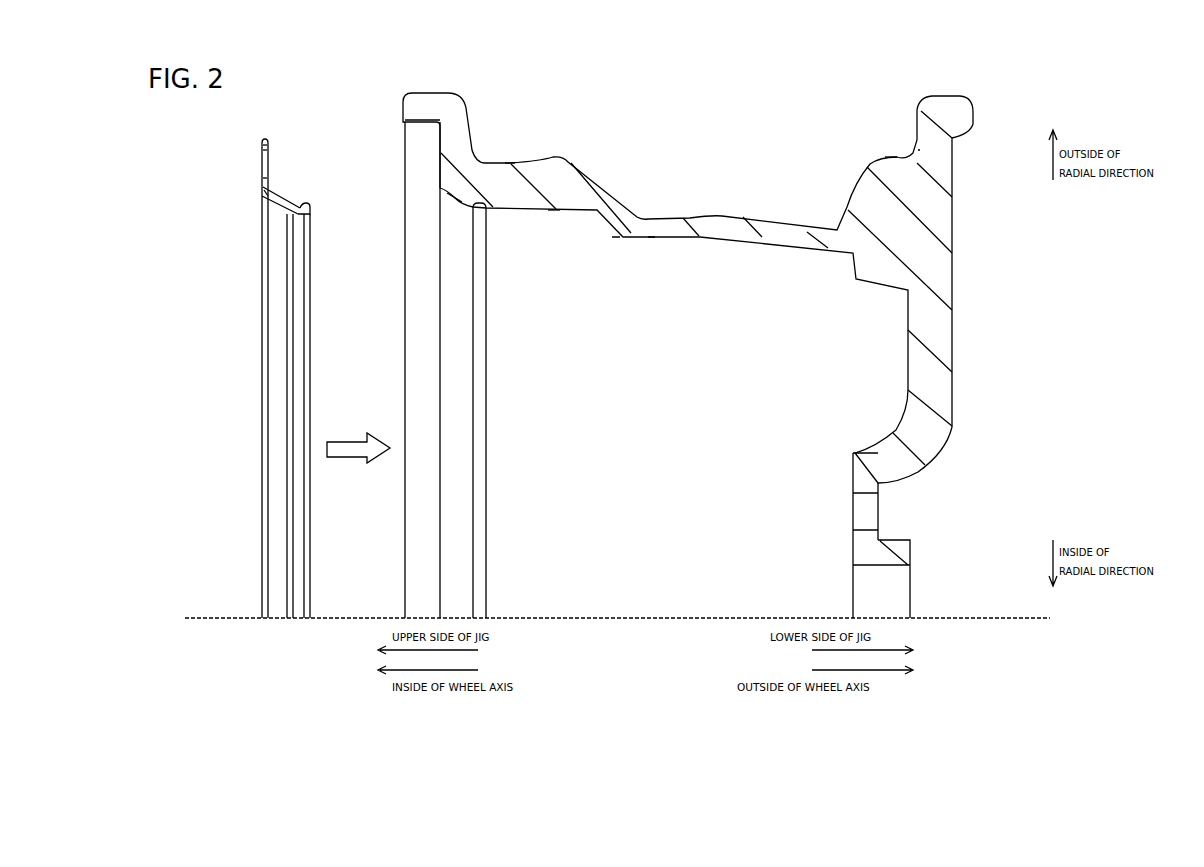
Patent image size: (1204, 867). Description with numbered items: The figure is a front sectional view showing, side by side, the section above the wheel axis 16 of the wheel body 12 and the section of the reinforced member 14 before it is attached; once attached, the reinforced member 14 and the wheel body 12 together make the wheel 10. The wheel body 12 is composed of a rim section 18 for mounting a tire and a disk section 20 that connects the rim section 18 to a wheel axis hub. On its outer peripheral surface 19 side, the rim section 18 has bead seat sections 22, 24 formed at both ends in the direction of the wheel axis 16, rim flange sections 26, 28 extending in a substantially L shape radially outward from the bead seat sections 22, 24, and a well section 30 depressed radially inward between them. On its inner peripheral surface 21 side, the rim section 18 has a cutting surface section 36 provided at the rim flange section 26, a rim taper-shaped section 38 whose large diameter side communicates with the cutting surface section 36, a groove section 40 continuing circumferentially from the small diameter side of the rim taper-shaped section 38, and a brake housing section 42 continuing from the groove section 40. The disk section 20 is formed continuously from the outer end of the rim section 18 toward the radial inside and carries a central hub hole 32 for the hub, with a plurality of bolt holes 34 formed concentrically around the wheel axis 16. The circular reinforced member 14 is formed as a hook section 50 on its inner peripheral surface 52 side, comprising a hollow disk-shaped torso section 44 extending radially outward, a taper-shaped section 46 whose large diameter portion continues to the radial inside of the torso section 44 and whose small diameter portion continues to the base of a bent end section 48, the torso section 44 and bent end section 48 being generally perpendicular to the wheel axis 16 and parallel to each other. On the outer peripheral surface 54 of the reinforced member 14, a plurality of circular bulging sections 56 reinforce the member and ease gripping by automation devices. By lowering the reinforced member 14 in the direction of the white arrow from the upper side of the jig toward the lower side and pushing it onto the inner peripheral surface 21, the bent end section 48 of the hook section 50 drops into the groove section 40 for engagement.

The wheel 10 is at (585, 134).
The wheel body 12 is at (955, 230).
The reinforced member 14 is at (275, 255).
The wheel axis 16 is at (980, 617).
The rim section 18 is at (672, 221).
The outer peripheral surface 19 is at (607, 163).
The disk section 20 is at (933, 340).
The inner peripheral surface 21 is at (553, 215).
The bead seat section 22 is at (512, 163).
The bead seat section 24 is at (890, 160).
The rim flange section 26 is at (426, 100).
The rim flange section 28 is at (945, 106).
The well section 30 is at (746, 220).
The hub hole 32 is at (868, 568).
The bolt holes 34 is at (858, 497).
The cutting surface section 36 is at (440, 150).
The rim taper-shaped section 38 is at (455, 200).
The groove section 40 is at (487, 206).
The brake housing section 42 is at (652, 247).
The torso section 44 is at (262, 156).
The taper-shaped section 46 is at (285, 200).
The bent end section 48 is at (313, 206).
The hook section 50 is at (283, 175).
The inner peripheral surface 52 is at (272, 150).
The outer peripheral surface 54 is at (270, 197).
The bulging section 56 is at (305, 310).